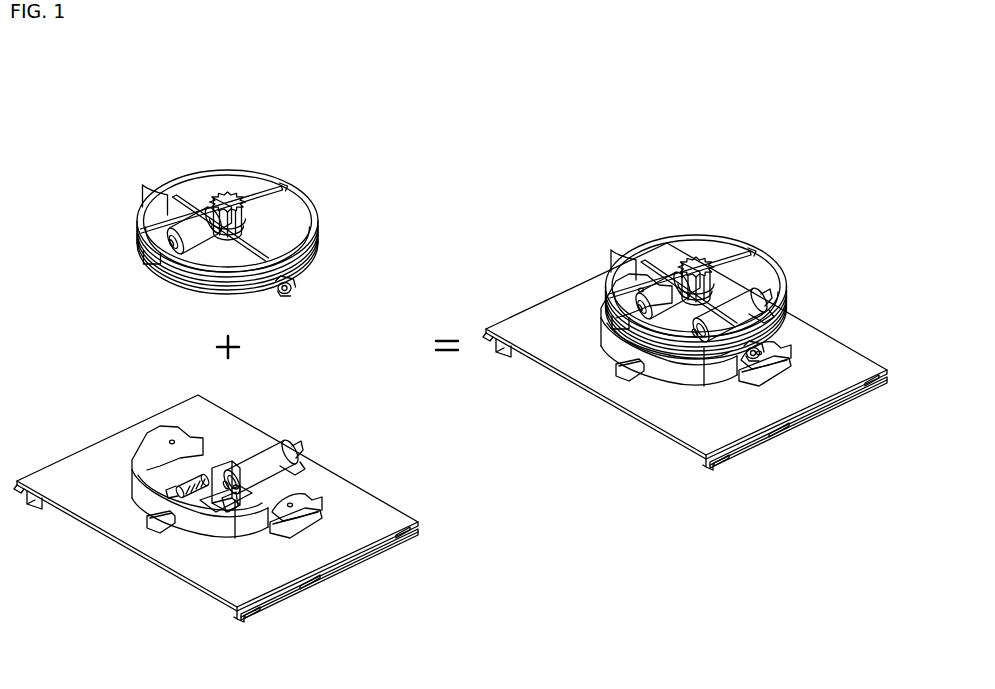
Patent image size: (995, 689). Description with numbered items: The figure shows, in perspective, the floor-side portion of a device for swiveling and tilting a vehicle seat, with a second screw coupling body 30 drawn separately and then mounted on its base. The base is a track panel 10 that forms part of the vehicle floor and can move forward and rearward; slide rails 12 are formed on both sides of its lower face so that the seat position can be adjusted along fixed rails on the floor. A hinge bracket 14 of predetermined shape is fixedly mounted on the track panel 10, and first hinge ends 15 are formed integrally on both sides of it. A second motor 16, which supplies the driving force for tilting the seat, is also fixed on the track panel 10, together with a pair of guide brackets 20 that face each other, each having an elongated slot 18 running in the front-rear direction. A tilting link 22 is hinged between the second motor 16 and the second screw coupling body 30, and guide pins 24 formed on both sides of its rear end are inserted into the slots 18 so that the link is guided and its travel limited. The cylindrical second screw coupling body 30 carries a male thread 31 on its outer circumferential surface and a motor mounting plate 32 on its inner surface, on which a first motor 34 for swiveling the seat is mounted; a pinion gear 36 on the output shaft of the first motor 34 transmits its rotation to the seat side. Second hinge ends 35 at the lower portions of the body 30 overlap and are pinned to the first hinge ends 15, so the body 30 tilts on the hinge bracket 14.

The track panel 10 is at (372, 486).
The slide rails 12 is at (222, 617).
The hinge bracket 14 is at (193, 533).
The first hinge ends 15 is at (293, 498).
The second motor 16 is at (270, 452).
The elongated slot 18 is at (217, 503).
The guide brackets 20 is at (218, 458).
The tilting link 22 is at (183, 482).
The guide pins 24 is at (228, 508).
The second screw coupling body 30 is at (310, 187).
The male thread 31 is at (316, 246).
The motor mounting plate 32 is at (215, 263).
The first motor 34 is at (190, 212).
The second hinge ends 35 is at (303, 279).
The pinion gear 36 is at (225, 197).